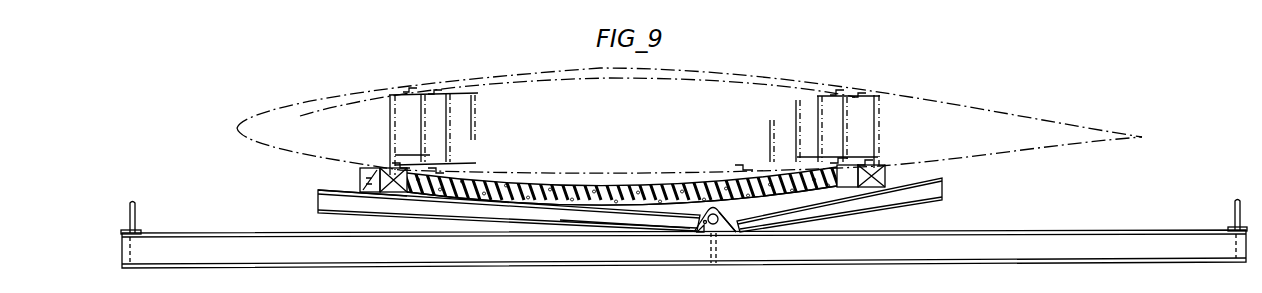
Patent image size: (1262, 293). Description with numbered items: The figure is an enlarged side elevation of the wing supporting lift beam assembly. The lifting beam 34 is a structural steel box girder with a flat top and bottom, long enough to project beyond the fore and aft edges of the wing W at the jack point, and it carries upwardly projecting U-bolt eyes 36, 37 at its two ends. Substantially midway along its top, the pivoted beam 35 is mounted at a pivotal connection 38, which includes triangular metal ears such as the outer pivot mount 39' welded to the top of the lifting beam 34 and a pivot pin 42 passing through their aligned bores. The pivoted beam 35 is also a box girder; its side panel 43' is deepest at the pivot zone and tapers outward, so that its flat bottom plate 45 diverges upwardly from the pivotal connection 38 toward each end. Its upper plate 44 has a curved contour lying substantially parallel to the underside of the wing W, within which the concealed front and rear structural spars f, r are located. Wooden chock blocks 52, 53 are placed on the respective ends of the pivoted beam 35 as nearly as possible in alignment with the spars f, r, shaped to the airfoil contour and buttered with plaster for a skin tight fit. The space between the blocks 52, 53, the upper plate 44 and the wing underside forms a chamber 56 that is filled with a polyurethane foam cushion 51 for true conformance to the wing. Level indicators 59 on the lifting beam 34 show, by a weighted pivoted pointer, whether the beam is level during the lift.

The wing W is at (953, 100).
The front structural spar f is at (388, 125).
The rear structural spar r is at (882, 127).
The lifting beam 34 is at (288, 233).
The pivoted beam 35 is at (322, 193).
The U-bolt eye 36 is at (135, 214).
The U-bolt eye 37 is at (1235, 211).
The pivotal connection 38 is at (706, 224).
The outer pivot mount 39' is at (751, 234).
The pivot pin 42 is at (621, 177).
The side panel 43' is at (625, 236).
The upper plate 44 is at (612, 180).
The flat plate 45 is at (514, 224).
The polyurethane foam cushion 51 is at (652, 181).
The wooden chock block 52 is at (360, 176).
The wooden chock block 53 is at (886, 171).
The chamber 56 is at (718, 188).
The level indicator 59 is at (157, 278).